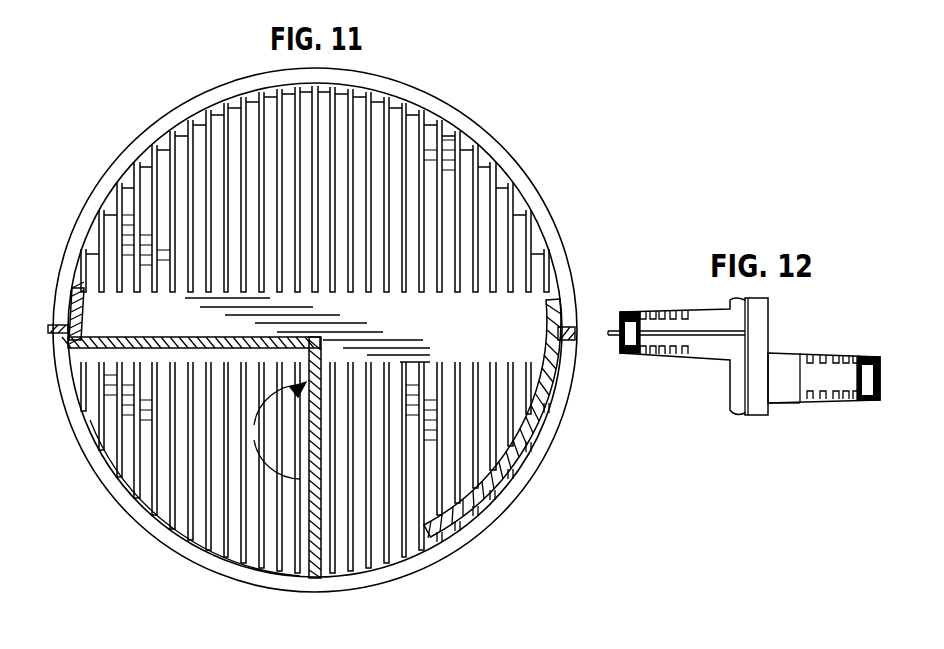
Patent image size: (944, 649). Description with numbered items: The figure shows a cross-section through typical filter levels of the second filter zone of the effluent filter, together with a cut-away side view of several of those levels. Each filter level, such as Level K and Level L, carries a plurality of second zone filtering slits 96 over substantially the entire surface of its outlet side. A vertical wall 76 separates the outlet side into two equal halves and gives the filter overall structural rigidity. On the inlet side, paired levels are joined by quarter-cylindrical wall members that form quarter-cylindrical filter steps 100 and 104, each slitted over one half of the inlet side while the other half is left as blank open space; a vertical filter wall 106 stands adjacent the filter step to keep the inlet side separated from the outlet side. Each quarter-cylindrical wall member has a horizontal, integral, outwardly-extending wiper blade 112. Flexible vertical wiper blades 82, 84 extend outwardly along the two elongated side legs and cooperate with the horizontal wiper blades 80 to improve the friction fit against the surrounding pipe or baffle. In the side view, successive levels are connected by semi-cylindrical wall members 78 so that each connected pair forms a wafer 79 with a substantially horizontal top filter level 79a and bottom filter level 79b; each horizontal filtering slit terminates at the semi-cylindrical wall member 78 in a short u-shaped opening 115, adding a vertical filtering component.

In FIG. 11, the vertical wall 76 is at (307, 540).
In FIG. 12, the semi-cylindrical wall member 78 is at (822, 381).
In FIG. 12, the wafer 79 is at (845, 400).
In FIG. 12, the top filter level 79a is at (783, 354).
In FIG. 12, the bottom filter level 79b is at (784, 408).
In FIG. 11, the wiper blade 80 is at (413, 95).
In FIG. 11, the vertical wiper blade 82 is at (62, 300).
In FIG. 11, the vertical wiper blade 84 is at (532, 320).
In FIG. 11, the second zone filtering slits 96 is at (447, 197).
In FIG. 11, the quarter-cylindrical filter step 100 is at (528, 462).
In FIG. 11, the quarter-cylindrical filter step 104 is at (496, 522).
In FIG. 11, the vertical filter wall 106 is at (112, 335).
In FIG. 11, the wiper blade 112 is at (135, 512).
In FIG. 12, the u-shaped opening 115 is at (663, 311).
In FIG. 11, the filter level L is at (548, 312).
In FIG. 11, the filter level K is at (182, 525).